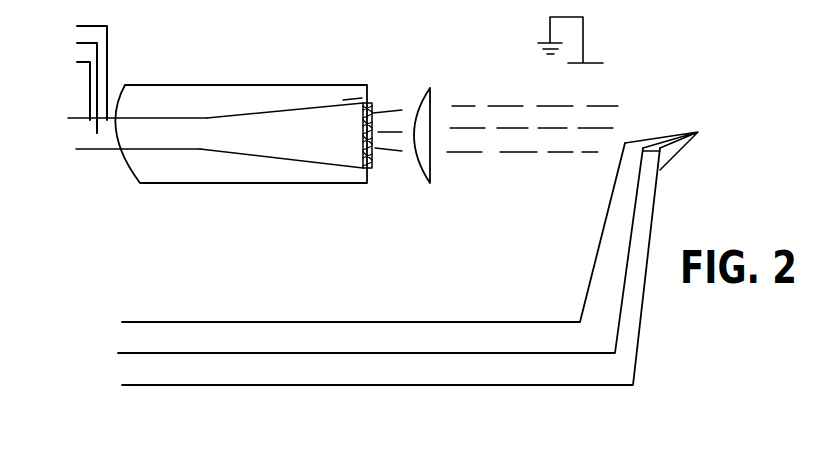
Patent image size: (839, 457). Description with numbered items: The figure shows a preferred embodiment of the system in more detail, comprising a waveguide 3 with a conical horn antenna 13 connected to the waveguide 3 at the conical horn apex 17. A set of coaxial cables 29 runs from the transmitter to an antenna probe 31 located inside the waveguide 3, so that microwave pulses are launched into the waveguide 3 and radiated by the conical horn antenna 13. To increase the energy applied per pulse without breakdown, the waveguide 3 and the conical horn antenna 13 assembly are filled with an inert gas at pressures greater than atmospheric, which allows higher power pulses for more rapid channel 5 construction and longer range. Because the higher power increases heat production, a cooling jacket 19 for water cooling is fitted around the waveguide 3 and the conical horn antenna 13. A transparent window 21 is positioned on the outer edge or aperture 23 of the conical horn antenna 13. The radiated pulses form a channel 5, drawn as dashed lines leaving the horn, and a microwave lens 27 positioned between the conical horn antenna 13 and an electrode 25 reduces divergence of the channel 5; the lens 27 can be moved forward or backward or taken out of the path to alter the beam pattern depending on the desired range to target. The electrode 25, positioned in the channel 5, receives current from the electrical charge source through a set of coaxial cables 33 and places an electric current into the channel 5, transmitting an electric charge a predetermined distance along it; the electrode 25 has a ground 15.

The waveguide 3 is at (195, 148).
The channel 5 is at (575, 104).
The conical horn antenna 13 is at (315, 163).
The ground 15 is at (583, 33).
The conical horn apex 17 is at (207, 127).
The cooling jacket 19 is at (268, 85).
The transparent window 21 is at (373, 103).
The aperture 23 is at (344, 98).
The electrode 25 is at (678, 158).
The microwave lens 27 is at (415, 88).
The set of coaxial cables 29 is at (107, 49).
The antenna probe 31 is at (98, 124).
The set of coaxial cables 33 is at (420, 322).